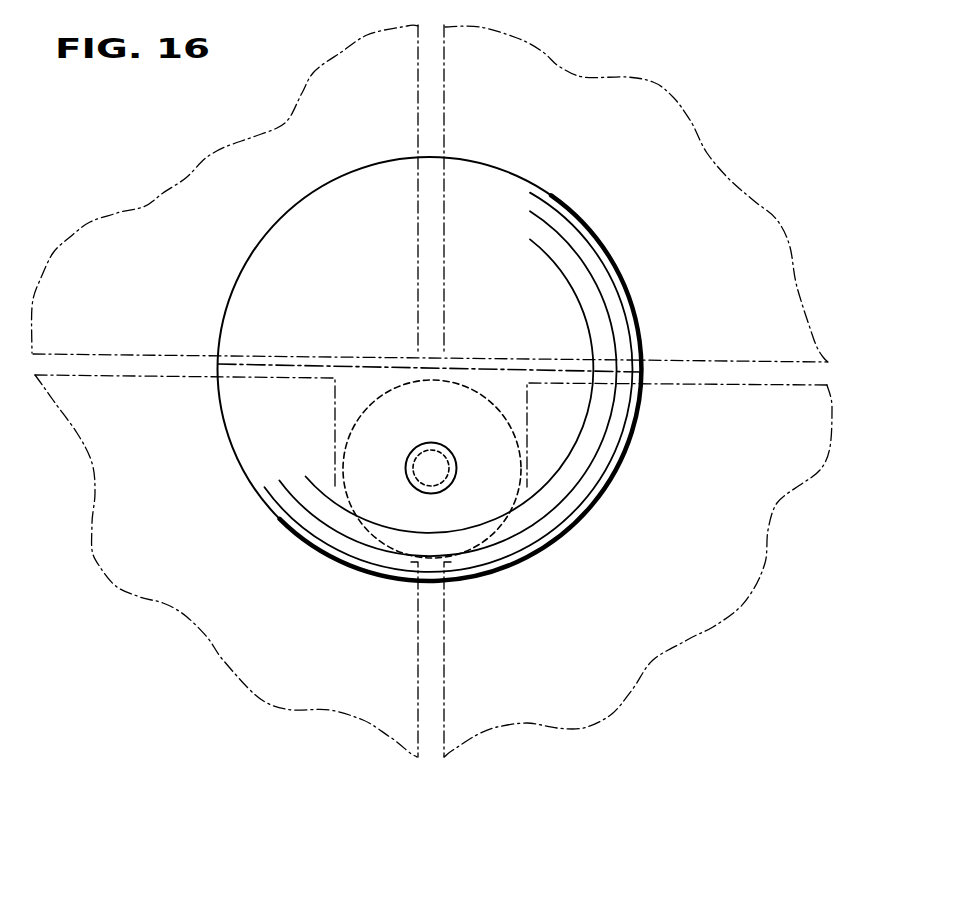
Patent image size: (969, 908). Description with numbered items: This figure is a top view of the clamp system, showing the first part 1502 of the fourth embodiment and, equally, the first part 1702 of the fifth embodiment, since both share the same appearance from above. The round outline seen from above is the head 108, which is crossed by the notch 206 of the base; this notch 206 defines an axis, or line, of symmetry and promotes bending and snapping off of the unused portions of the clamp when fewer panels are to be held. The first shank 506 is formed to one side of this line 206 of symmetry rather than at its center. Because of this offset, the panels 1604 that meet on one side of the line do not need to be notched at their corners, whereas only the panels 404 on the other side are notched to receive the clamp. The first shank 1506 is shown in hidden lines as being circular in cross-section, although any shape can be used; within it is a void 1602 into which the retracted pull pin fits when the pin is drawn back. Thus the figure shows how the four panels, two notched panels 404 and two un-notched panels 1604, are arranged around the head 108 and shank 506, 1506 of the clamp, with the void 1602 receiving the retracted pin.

The head 108 is at (353, 210).
The first part 1502 is at (465, 338).
The first part 1702 is at (600, 135).
The panels 1604 is at (185, 292).
The panels 404 is at (285, 612).
The notch 206 is at (297, 366).
The first shank 506 is at (433, 467).
The first shank 1506 is at (363, 440).
The void 1602 is at (396, 469).